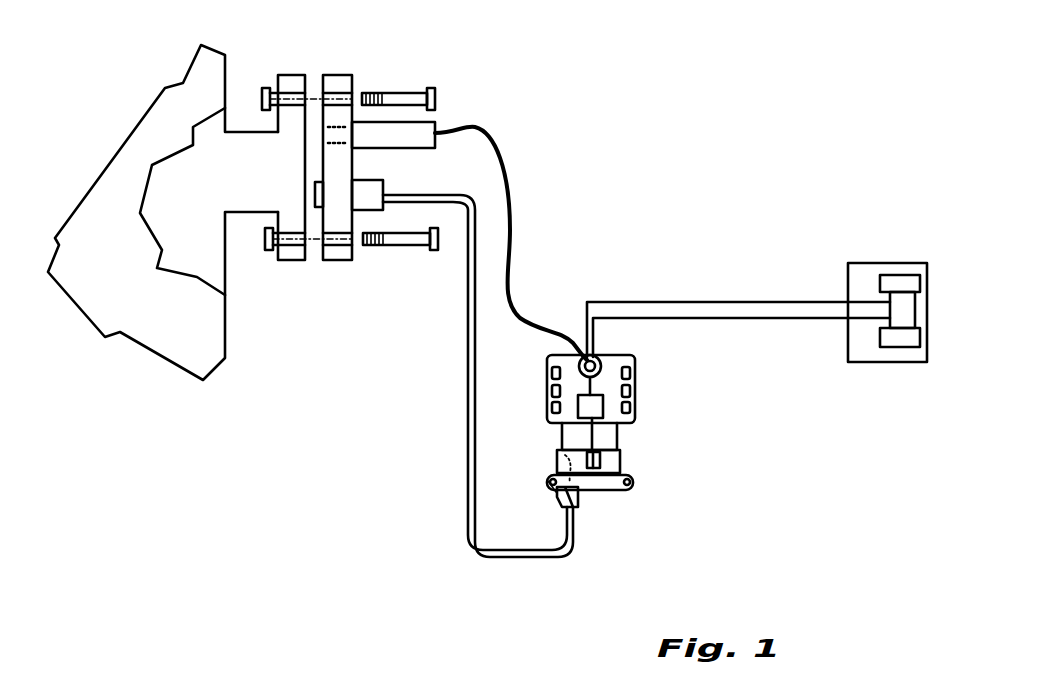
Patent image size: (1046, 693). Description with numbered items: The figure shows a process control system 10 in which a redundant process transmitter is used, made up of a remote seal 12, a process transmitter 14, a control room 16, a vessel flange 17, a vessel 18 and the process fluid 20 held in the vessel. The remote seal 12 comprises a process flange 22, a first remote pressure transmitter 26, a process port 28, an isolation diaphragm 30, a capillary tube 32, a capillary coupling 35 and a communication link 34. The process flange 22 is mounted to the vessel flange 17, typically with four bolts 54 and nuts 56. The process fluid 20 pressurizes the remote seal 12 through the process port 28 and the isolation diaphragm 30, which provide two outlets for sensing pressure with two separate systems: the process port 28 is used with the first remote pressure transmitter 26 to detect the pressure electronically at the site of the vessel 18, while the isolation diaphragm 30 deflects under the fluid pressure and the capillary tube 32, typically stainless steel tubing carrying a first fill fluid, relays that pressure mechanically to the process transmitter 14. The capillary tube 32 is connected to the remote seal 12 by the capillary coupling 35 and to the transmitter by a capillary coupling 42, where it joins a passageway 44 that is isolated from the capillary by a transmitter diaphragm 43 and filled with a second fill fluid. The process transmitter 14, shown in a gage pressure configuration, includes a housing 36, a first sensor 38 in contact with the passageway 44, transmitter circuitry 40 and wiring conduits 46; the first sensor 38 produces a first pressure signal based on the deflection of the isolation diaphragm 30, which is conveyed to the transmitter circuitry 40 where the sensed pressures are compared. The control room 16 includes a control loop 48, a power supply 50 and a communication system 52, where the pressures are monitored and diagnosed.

The process control system 10 is at (680, 117).
The remote seal 12 is at (347, 335).
The process transmitter 14 is at (670, 405).
The control room 16 is at (873, 273).
The vessel flange 17 is at (297, 262).
The vessel 18 is at (163, 317).
The process fluid 20 is at (196, 208).
The process flange 22 is at (347, 262).
The first remote pressure transmitter 26 is at (437, 123).
The process port 28 is at (342, 135).
The isolation diaphragm 30 is at (315, 190).
The capillary tube 32 is at (515, 557).
The communication link 34 is at (473, 127).
The capillary coupling 35 is at (383, 210).
The housing 36 is at (610, 363).
The first sensor 38 is at (617, 460).
The transmitter circuitry 40 is at (592, 410).
The capillary coupling 42 is at (577, 495).
The transmitter diaphragm 43 is at (555, 503).
The passageway 44 is at (563, 457).
The wiring conduits 46 is at (587, 353).
The control loop 48 is at (682, 318).
The power supply 50 is at (898, 275).
The communication system 52 is at (892, 347).
The bolts 54 is at (430, 88).
The nuts 56 is at (267, 88).